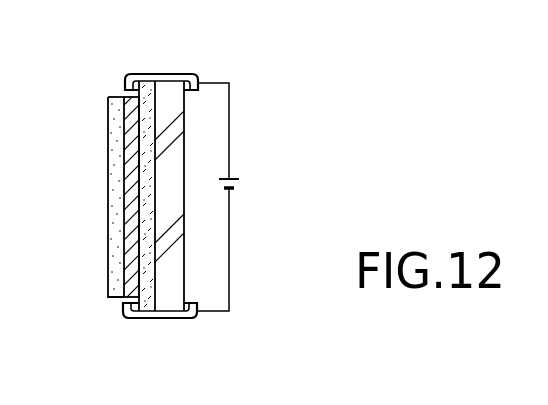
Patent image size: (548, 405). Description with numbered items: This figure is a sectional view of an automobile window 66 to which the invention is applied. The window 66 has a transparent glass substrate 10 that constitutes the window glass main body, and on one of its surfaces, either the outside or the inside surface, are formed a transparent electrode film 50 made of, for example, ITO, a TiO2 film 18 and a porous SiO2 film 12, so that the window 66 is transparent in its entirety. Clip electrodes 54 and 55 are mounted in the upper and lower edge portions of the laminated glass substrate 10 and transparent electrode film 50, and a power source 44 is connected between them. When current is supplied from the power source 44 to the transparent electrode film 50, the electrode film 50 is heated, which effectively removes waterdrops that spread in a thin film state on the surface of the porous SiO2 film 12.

The automobile window 66 is at (342, 74).
The clip electrode 54 is at (175, 74).
The bottom end cap 55 is at (167, 318).
The porous SiO2 film 12 is at (117, 241).
The TiO2 film 18 is at (130, 263).
The transparent electrode film 50 is at (147, 306).
The transparent glass substrate 10 is at (176, 254).
The power source 44 is at (233, 178).